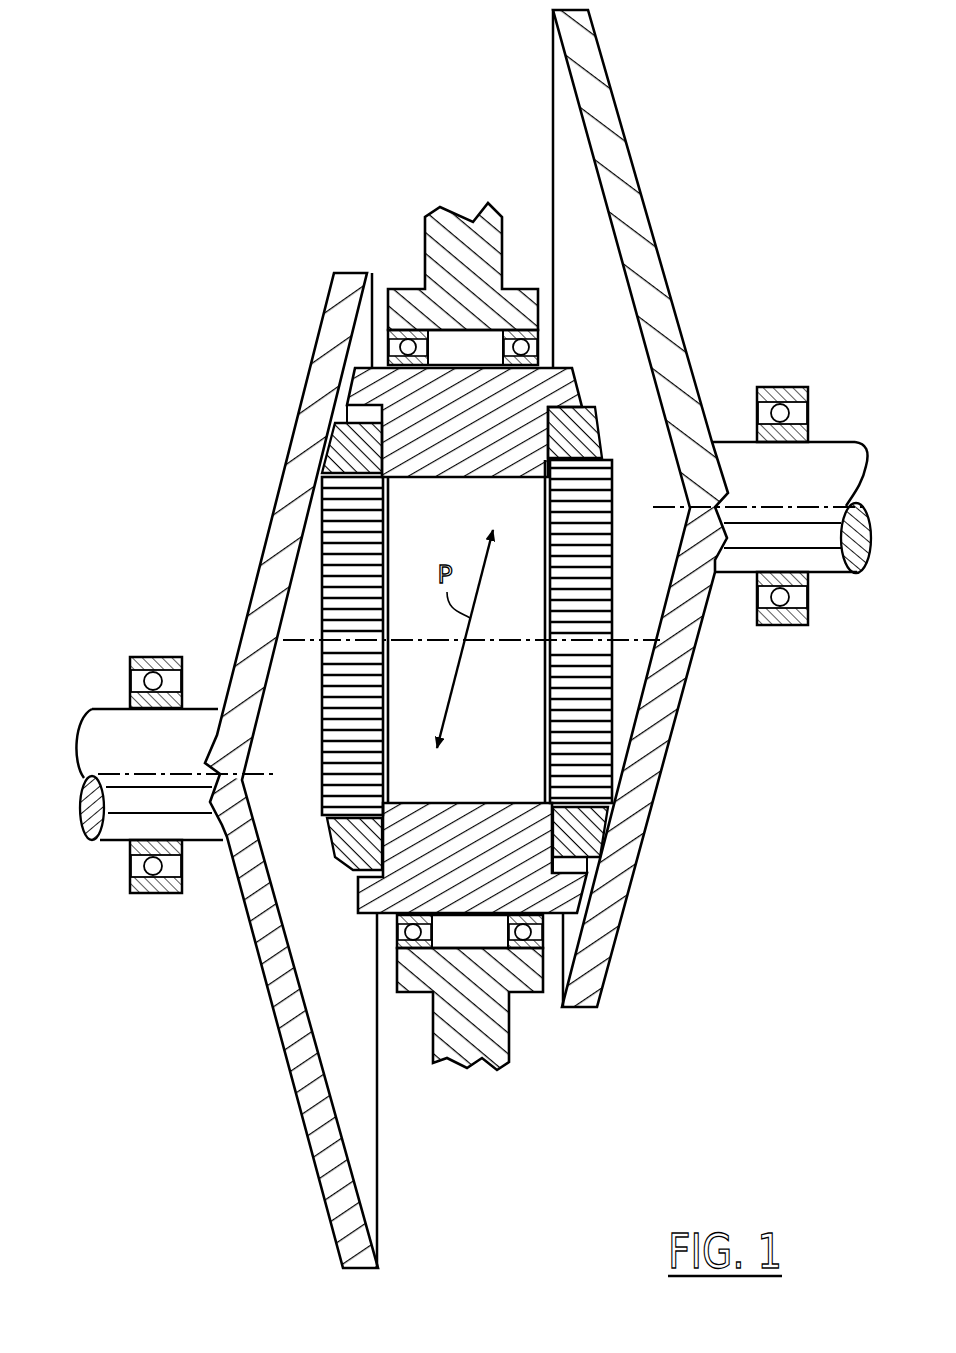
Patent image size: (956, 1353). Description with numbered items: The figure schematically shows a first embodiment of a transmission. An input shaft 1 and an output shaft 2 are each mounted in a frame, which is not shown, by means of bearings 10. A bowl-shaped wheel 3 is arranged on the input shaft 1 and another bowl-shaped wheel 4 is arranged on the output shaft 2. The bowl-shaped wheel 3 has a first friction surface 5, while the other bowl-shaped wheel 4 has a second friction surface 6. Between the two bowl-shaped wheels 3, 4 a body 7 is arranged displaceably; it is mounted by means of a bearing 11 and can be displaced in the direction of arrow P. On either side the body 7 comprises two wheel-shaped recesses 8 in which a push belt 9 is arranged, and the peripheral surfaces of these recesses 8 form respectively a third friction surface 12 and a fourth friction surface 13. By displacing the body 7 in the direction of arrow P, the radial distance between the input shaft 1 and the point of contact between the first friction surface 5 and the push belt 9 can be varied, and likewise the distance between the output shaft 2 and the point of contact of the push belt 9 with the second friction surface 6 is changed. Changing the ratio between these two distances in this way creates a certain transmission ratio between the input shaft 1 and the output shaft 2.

The input shaft 1 is at (105, 735).
The output shaft 2 is at (838, 447).
The bowl-shaped wheel 3 is at (320, 328).
The bowl-shaped wheel 4 is at (616, 108).
The first friction surface 5 is at (372, 273).
The second friction surface 6 is at (592, 148).
The body 7 is at (568, 354).
The wheel-shaped recesses 8 is at (363, 413).
The push belt 9 is at (608, 828).
The bearings 10 is at (152, 660).
The bearing 11 is at (527, 995).
The third friction surface 12 is at (357, 878).
The fourth friction surface 13 is at (583, 403).